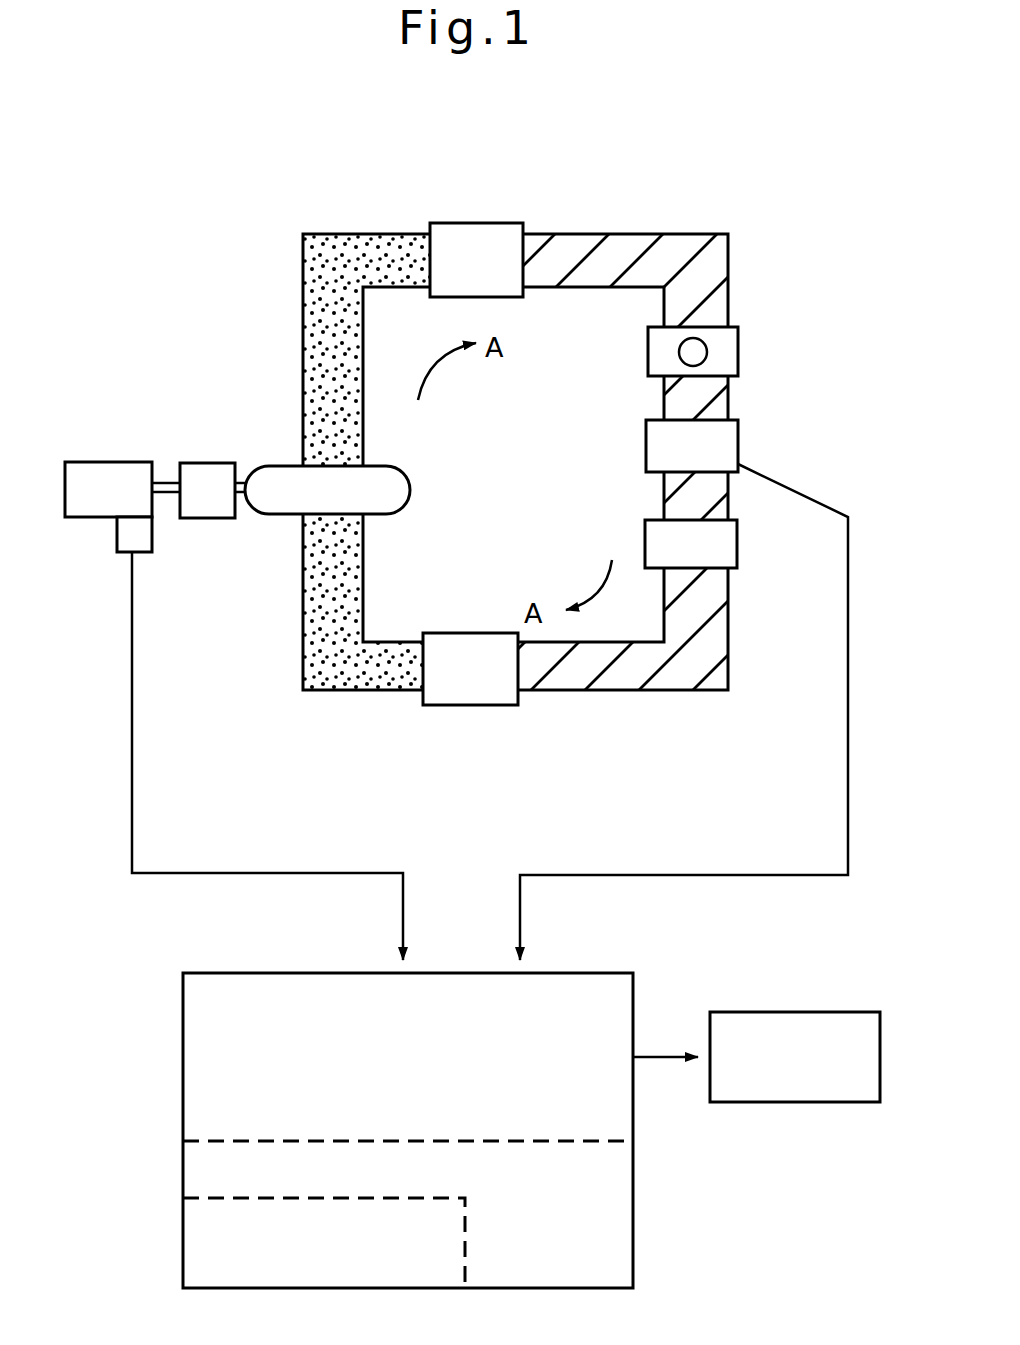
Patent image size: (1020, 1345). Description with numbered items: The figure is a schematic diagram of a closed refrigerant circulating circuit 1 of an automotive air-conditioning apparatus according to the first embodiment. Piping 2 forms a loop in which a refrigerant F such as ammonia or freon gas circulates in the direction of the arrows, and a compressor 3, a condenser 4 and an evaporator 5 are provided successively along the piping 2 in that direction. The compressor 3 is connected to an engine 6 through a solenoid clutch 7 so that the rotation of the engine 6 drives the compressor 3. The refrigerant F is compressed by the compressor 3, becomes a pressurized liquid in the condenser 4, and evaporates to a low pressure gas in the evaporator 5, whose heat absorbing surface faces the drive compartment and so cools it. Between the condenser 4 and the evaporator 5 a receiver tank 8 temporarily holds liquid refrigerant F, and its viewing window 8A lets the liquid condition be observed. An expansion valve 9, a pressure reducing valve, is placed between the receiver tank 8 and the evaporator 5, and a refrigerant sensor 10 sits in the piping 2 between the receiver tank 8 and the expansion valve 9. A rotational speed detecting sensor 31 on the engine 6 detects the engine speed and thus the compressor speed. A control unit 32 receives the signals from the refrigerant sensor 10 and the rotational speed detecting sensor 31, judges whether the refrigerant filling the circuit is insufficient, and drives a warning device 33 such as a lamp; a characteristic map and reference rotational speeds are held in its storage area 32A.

The closed refrigerant circulating circuit 1 is at (510, 431).
The piping 2 is at (320, 308).
The compressor 3 is at (268, 508).
The condenser 4 is at (500, 237).
The evaporator 5 is at (494, 698).
The engine 6 is at (80, 512).
The solenoid clutch 7 is at (193, 512).
The receiver tank 8 is at (729, 354).
The viewing window 8A is at (702, 344).
The expansion valve 9 is at (732, 553).
The refrigerant sensor 10 is at (732, 447).
The rotational speed detecting sensor 31 is at (122, 556).
The control unit 32 is at (345, 1112).
The storage area 32A is at (183, 1153).
The warning device 33 is at (770, 1011).
The refrigerant F is at (648, 240).